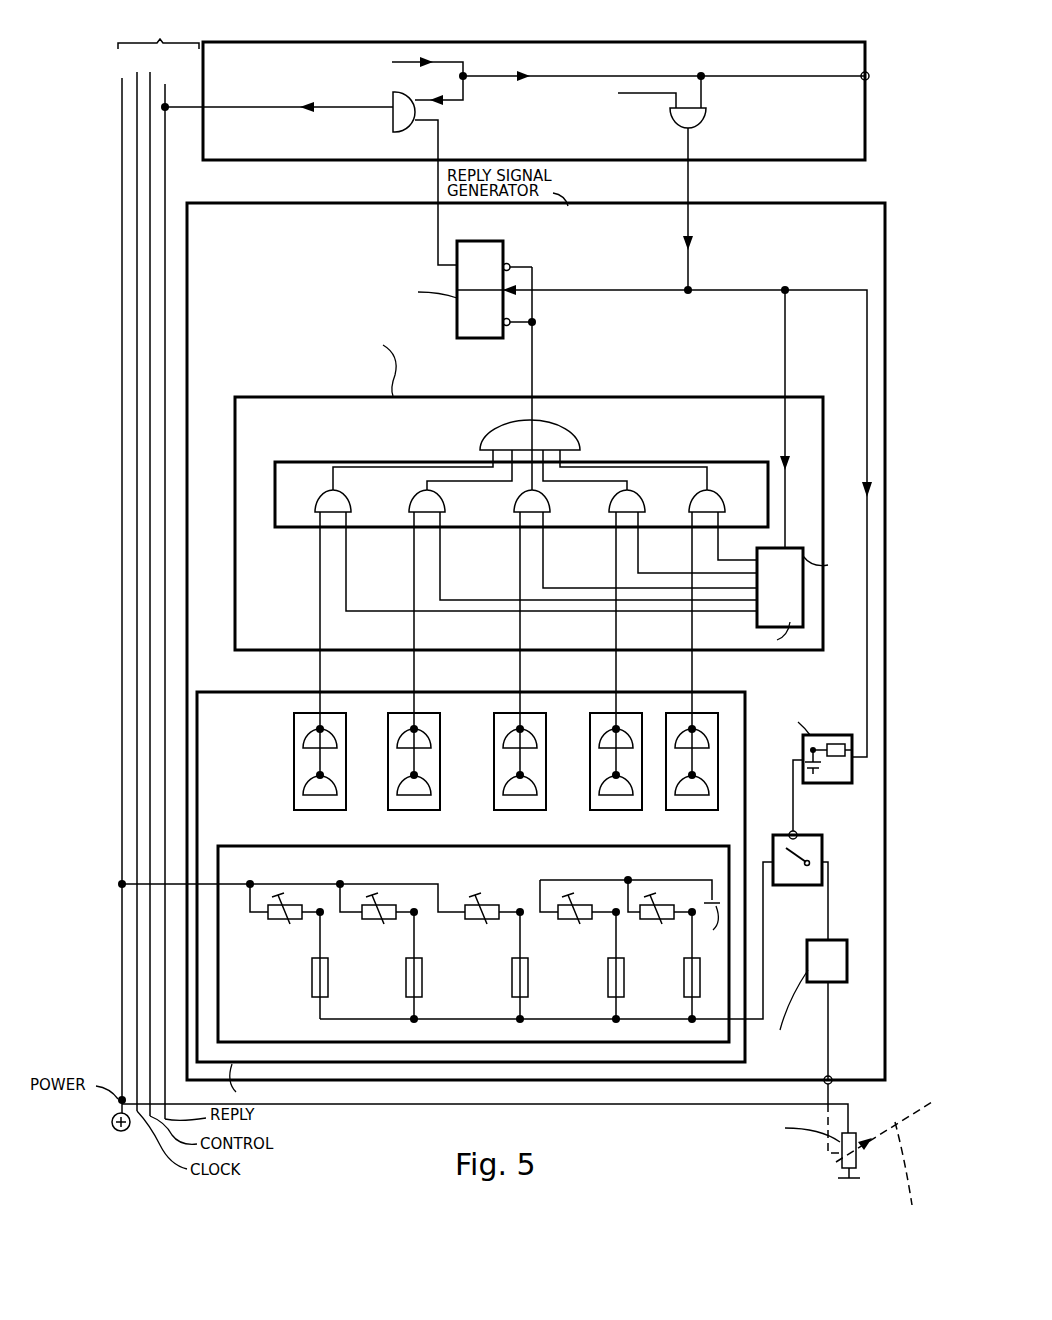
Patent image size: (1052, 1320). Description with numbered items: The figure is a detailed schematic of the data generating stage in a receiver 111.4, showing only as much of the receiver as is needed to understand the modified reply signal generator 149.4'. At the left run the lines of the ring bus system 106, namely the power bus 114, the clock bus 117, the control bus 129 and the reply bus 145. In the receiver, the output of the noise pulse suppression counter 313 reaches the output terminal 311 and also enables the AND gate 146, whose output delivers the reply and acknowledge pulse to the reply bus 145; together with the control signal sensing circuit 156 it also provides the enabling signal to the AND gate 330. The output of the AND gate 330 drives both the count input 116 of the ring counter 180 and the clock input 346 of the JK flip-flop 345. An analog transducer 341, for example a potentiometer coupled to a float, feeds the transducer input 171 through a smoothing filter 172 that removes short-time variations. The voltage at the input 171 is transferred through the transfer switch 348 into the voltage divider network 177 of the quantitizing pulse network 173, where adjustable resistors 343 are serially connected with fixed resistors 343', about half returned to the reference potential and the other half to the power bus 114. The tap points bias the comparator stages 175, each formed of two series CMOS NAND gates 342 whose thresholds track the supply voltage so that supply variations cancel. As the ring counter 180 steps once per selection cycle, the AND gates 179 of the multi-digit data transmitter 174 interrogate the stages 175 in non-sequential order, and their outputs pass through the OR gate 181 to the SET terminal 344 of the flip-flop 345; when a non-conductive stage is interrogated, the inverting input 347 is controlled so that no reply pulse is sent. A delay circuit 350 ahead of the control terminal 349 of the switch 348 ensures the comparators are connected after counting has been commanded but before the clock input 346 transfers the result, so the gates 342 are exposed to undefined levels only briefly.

The ring bus system 106 is at (158, 31).
The power bus 114 is at (124, 88).
The clock bus 117 is at (139, 82).
The control bus 129 is at (152, 80).
The reply bus 145 is at (178, 94).
The AND gate 146 is at (398, 120).
The noise pulse suppression counter 313 is at (599, 79).
The control signal sensing circuit 156 is at (618, 97).
The AND gate 330 is at (702, 120).
The output terminal 311 is at (863, 80).
The receiver 111.4 is at (828, 158).
The modified reply signal generator 149.4' is at (536, 624).
The JK flip-flop 345 is at (482, 252).
The SET terminal 344 is at (512, 264).
The clock input 346 is at (510, 295).
The inverting input 347 is at (500, 332).
The multi-digit data transmitter 174 is at (262, 402).
The OR gate 181 is at (562, 446).
The AND gates 179 is at (340, 494).
The ring counter 180 is at (797, 552).
The count input 116 is at (833, 564).
The quantitizing pulse network 173 is at (244, 714).
The comparator stages 175 is at (335, 724).
The COS-MOS gates 342 is at (312, 783).
The voltage divider network 177 is at (233, 862).
The adjustable resistors 343 is at (473, 926).
The fixed resistors 343' is at (472, 965).
The delay circuit 350 is at (814, 768).
The control terminal 349 is at (797, 836).
The transfer switch 348 is at (795, 872).
The filter 172 is at (830, 982).
The transducer input 171 is at (832, 1084).
The transducer 341 is at (840, 1160).